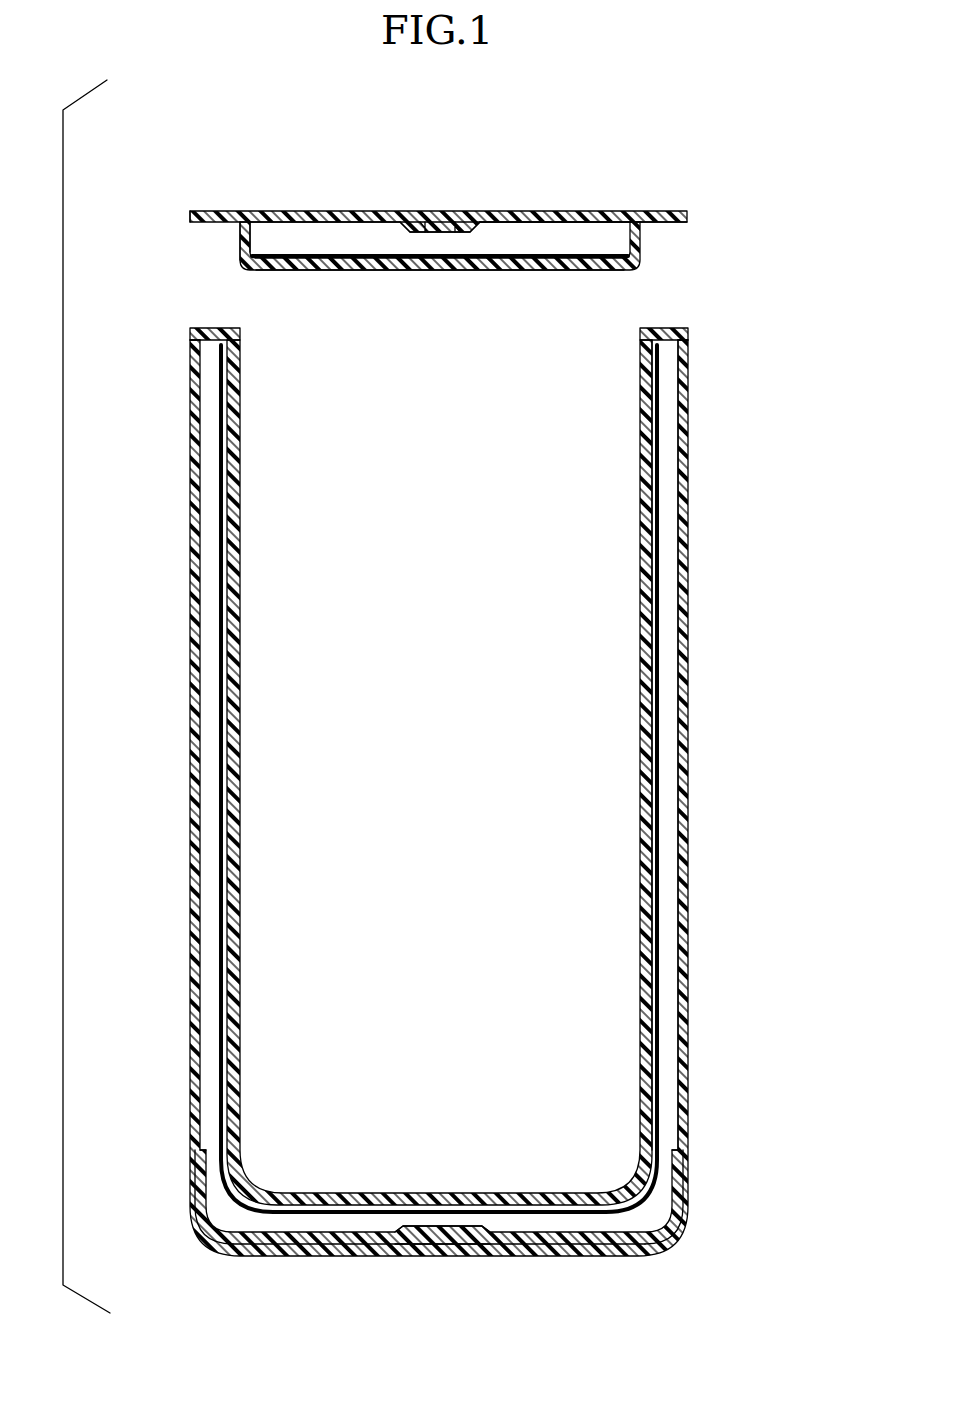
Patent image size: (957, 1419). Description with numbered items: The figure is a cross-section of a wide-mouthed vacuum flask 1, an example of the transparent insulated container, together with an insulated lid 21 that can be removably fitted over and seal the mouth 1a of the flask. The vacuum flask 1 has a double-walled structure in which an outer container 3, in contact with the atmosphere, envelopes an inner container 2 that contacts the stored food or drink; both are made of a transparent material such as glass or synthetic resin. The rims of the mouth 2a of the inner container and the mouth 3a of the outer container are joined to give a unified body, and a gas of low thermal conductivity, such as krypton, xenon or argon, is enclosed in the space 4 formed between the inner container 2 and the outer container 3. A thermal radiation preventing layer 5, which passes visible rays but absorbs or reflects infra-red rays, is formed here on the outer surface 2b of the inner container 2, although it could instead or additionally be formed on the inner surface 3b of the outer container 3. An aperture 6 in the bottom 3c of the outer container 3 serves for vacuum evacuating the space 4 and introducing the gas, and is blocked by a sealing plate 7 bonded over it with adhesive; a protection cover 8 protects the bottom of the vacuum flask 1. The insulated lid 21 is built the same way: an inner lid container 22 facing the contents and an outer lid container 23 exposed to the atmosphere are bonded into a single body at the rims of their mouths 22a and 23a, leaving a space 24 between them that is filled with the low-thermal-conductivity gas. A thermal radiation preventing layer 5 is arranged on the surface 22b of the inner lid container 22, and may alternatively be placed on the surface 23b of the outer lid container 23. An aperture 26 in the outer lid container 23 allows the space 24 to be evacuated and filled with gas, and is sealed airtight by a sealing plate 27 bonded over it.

The vacuum flask 1 is at (168, 493).
The mouth 1a is at (258, 328).
The inner container 2 is at (655, 445).
The mouth of the inner container 2a is at (660, 328).
The outer surface of the inner container 2b is at (655, 520).
The outer container 3 is at (683, 567).
The mouth of the outer container 3a is at (690, 345).
The inner surface of the outer container 3b is at (688, 660).
The bottom of the outer container 3c is at (518, 1246).
The space 4 is at (668, 752).
The thermal radiation preventing layer 5 is at (350, 256).
The aperture 6 is at (440, 1228).
The sealing plate 7 is at (408, 1250).
The protection cover 8 is at (565, 1257).
The insulated lid 21 is at (303, 190).
The inner lid container 22 is at (578, 270).
The mouth of the inner lid container 22a is at (240, 236).
The surface of the inner lid container 22b is at (395, 266).
The outer lid container 23 is at (505, 211).
The mouth of the outer lid container 23a is at (228, 211).
The surface of the outer lid container 23b is at (540, 228).
The space 24 is at (600, 234).
The aperture 26 is at (440, 233).
The sealing plate 27 is at (418, 211).